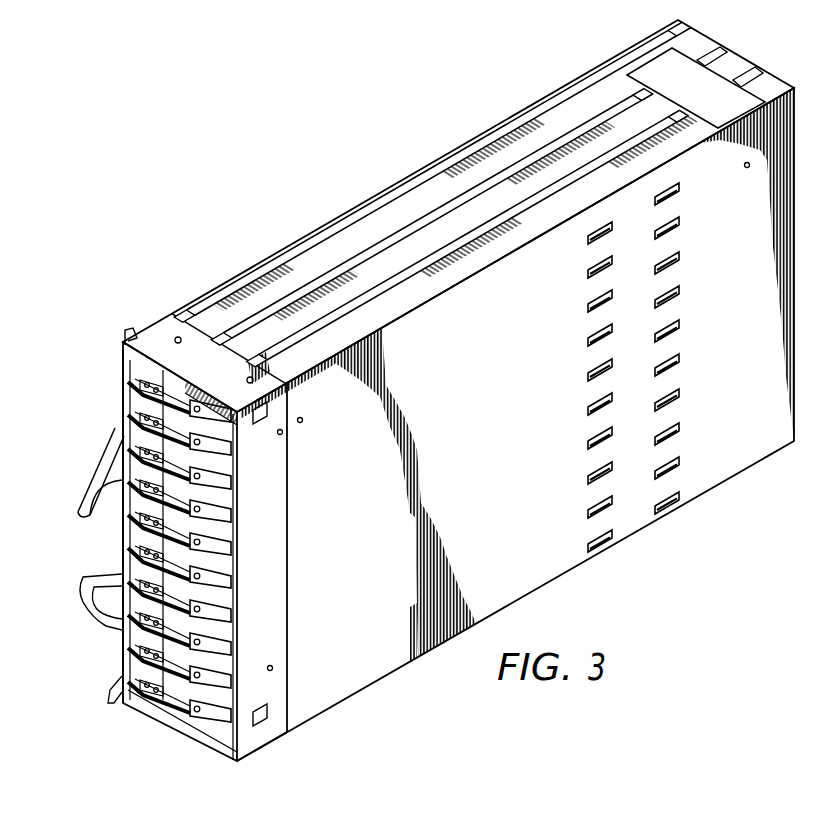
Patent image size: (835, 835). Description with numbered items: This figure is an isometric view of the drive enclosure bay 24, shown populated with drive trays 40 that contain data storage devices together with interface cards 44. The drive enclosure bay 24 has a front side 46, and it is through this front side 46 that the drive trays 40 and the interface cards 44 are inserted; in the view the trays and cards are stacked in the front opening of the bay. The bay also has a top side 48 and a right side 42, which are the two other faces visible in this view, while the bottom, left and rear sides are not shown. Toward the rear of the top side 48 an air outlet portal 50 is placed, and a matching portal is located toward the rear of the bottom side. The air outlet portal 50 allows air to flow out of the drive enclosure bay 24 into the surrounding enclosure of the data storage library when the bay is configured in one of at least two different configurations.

The drive enclosure bay 24 is at (362, 163).
The drive trays 40 is at (124, 414).
The right side 42 is at (720, 467).
The interface cards 44 is at (124, 379).
The front side 46 is at (268, 738).
The top side 48 is at (602, 97).
The air outlet portal 50 is at (710, 90).